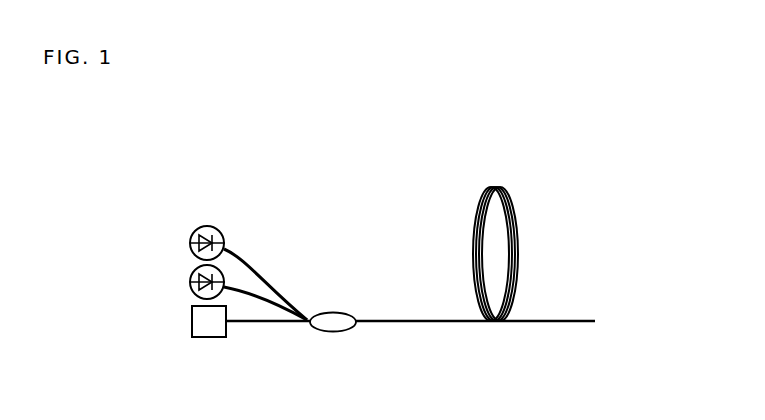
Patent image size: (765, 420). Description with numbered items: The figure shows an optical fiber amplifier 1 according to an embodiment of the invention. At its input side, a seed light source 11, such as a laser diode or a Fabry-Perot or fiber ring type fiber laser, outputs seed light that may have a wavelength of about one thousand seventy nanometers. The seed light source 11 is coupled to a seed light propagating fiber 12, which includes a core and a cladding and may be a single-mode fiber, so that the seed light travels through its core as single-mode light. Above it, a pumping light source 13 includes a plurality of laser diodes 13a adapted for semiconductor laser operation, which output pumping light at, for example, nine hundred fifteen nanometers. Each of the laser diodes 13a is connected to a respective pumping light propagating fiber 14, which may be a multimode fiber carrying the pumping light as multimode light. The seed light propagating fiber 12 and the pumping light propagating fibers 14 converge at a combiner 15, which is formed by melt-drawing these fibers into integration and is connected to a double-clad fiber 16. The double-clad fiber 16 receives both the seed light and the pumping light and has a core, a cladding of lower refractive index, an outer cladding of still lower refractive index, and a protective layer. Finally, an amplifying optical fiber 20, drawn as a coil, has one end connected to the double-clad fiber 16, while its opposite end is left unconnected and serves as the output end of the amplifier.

The optical fiber amplifier 1 is at (598, 181).
The seed light source 11 is at (209, 323).
The seed light propagating fiber 12 is at (268, 323).
The pumping light source 13 is at (112, 250).
The laser diode 13a is at (190, 244).
The pumping light propagating fiber 14 is at (232, 250).
The combiner 15 is at (340, 323).
The double-clad fiber 16 is at (393, 323).
The amplifying optical fiber 20 is at (515, 321).